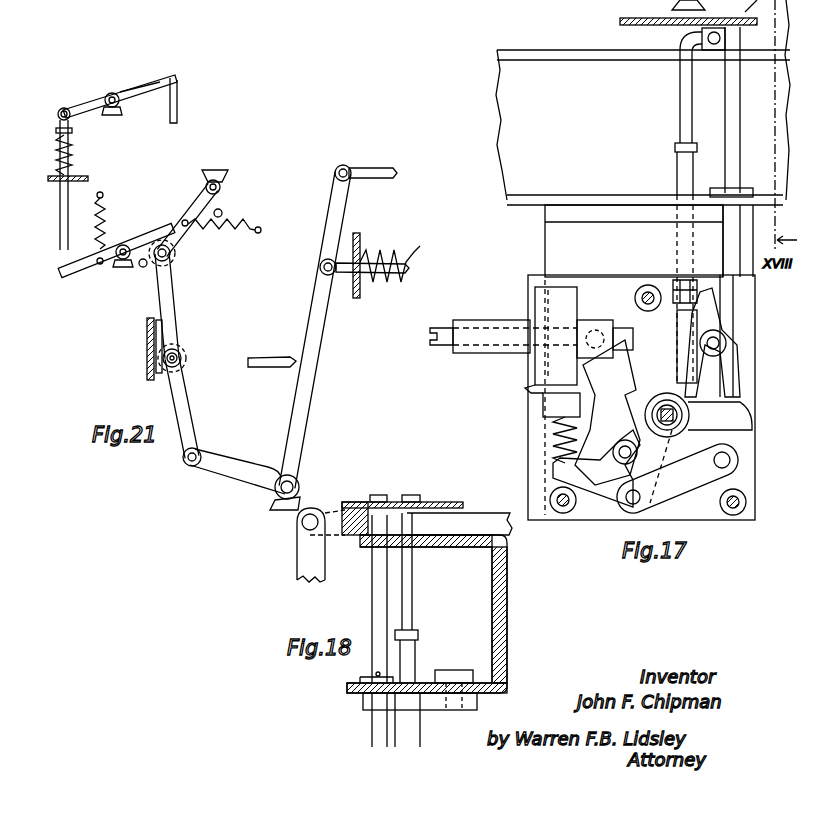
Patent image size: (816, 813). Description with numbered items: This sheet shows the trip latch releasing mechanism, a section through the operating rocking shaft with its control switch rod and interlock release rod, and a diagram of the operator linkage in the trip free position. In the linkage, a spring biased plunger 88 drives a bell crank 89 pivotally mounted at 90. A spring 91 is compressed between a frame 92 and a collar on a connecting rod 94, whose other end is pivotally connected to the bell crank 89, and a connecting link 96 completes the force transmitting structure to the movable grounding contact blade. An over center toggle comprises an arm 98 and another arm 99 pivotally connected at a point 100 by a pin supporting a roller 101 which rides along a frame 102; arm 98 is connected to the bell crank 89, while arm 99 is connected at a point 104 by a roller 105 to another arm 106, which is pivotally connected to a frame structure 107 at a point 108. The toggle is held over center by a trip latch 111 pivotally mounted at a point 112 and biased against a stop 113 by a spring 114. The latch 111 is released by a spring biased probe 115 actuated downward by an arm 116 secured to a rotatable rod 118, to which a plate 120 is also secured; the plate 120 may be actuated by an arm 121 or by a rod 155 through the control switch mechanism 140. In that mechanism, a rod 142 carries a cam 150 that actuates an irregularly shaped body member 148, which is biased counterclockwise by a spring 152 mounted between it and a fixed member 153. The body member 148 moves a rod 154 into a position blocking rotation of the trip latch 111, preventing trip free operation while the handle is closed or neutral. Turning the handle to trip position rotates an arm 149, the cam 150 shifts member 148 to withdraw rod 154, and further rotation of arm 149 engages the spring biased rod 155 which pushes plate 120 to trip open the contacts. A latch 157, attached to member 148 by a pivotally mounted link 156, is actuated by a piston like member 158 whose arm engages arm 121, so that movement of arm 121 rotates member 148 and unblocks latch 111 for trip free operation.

In FIG. 21, the spring biased plunger 88 is at (265, 357).
In FIG. 21, the bell crank 89 is at (290, 411).
In FIG. 21, the pivot 90 is at (275, 501).
In FIG. 21, the spring 91 is at (370, 285).
In FIG. 21, the frame 92 is at (362, 241).
In FIG. 21, the connecting rod 94 is at (398, 262).
In FIG. 21, the connecting link 96 is at (386, 159).
In FIG. 21, the arm 98 is at (172, 400).
In FIG. 21, the arm 99 is at (173, 311).
In FIG. 21, the pivot point 100 is at (183, 361).
In FIG. 21, the roller 101 is at (183, 356).
In FIG. 21, the frame 102 is at (168, 331).
In FIG. 21, the pivot point 104 is at (172, 253).
In FIG. 21, the roller 105 is at (141, 268).
In FIG. 21, the arm 106 is at (195, 204).
In FIG. 21, the frame structure 107 is at (222, 159).
In FIG. 21, the pivot point 108 is at (222, 188).
In FIG. 21, the trip latch 111 is at (76, 281).
In FIG. 21, the pivot point 112 is at (123, 245).
In FIG. 21, the stop 113 is at (134, 269).
In FIG. 21, the spring 114 is at (104, 215).
In FIG. 21, the spring biased probe 115 is at (62, 225).
In FIG. 18, the spring biased probe 115 is at (297, 562).
In FIG. 21, the arm 116 is at (97, 103).
In FIG. 18, the arm 116 is at (326, 503).
In FIG. 21, the rotatable rod 118 is at (113, 93).
In FIG. 18, the rotatable rod 118 is at (352, 537).
In FIG. 21, the plate 120 is at (155, 82).
In FIG. 18, the plate 120 is at (442, 501).
In FIG. 17, the plate 120 is at (640, 25).
In FIG. 18, the arm 121 is at (486, 513).
In FIG. 17, the arm 121 is at (740, 30).
In FIG. 17, the control switch mechanism 140 is at (608, 485).
In FIG. 17, the rod 142 is at (671, 432).
In FIG. 17, the irregularly shaped body member 148 is at (617, 384).
In FIG. 17, the arm 149 is at (749, 420).
In FIG. 17, the cam 150 is at (646, 395).
In FIG. 17, the spring 152 is at (553, 443).
In FIG. 17, the fixed member 153 is at (543, 405).
In FIG. 17, the rod 154 is at (441, 328).
In FIG. 21, the spring biased rod 155 is at (177, 104).
In FIG. 18, the spring biased rod 155 is at (372, 610).
In FIG. 17, the spring biased rod 155 is at (735, 118).
In FIG. 17, the link 156 is at (684, 482).
In FIG. 17, the latch 157 is at (718, 377).
In FIG. 18, the piston like member 158 is at (416, 650).
In FIG. 17, the piston like member 158 is at (678, 170).